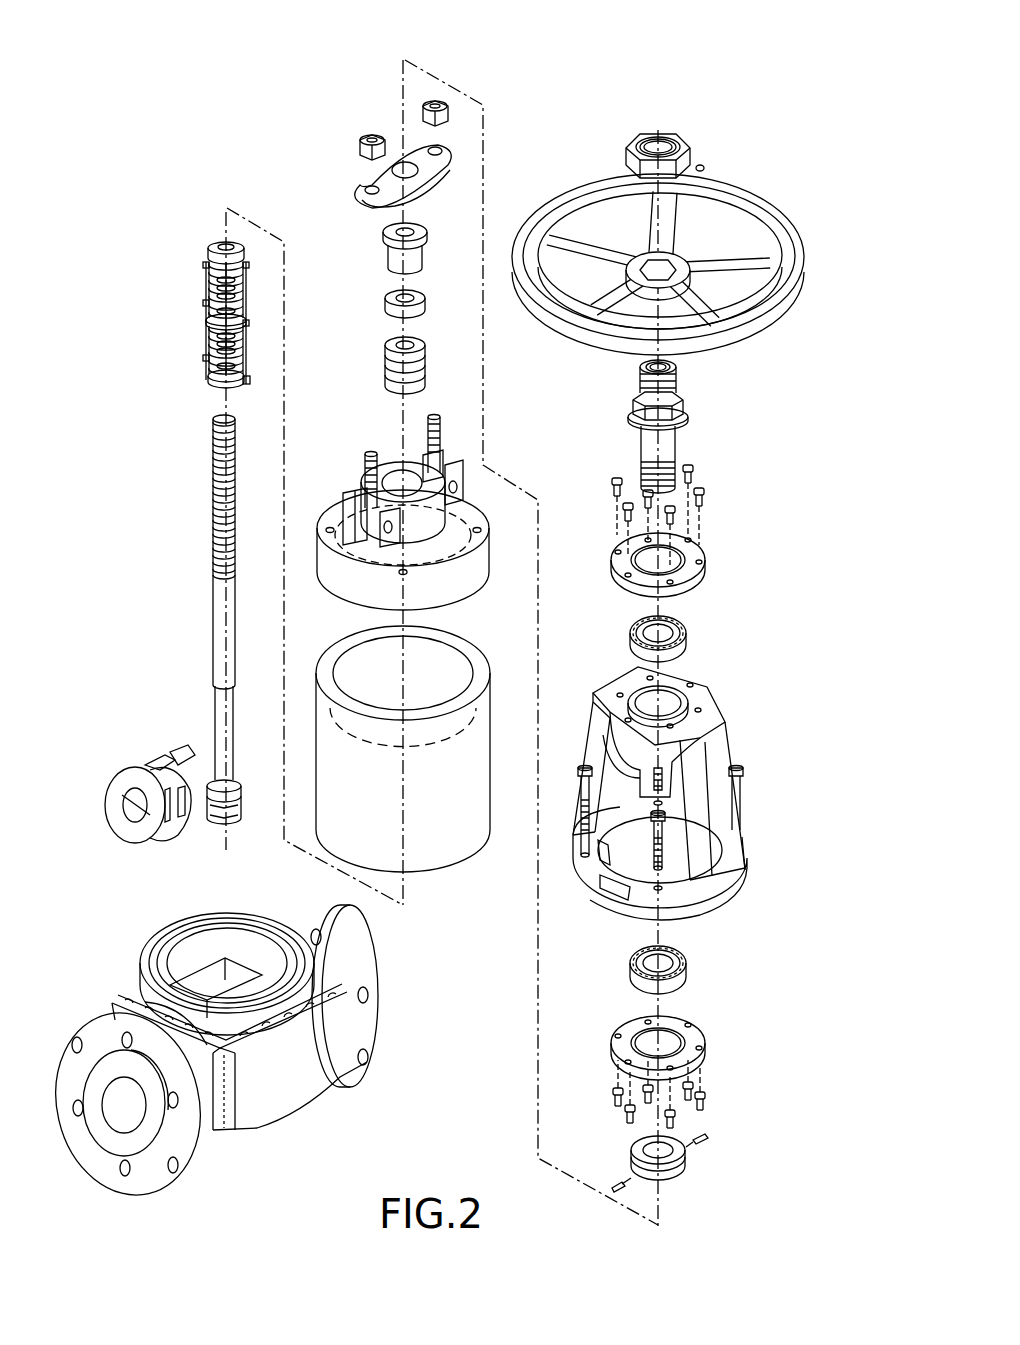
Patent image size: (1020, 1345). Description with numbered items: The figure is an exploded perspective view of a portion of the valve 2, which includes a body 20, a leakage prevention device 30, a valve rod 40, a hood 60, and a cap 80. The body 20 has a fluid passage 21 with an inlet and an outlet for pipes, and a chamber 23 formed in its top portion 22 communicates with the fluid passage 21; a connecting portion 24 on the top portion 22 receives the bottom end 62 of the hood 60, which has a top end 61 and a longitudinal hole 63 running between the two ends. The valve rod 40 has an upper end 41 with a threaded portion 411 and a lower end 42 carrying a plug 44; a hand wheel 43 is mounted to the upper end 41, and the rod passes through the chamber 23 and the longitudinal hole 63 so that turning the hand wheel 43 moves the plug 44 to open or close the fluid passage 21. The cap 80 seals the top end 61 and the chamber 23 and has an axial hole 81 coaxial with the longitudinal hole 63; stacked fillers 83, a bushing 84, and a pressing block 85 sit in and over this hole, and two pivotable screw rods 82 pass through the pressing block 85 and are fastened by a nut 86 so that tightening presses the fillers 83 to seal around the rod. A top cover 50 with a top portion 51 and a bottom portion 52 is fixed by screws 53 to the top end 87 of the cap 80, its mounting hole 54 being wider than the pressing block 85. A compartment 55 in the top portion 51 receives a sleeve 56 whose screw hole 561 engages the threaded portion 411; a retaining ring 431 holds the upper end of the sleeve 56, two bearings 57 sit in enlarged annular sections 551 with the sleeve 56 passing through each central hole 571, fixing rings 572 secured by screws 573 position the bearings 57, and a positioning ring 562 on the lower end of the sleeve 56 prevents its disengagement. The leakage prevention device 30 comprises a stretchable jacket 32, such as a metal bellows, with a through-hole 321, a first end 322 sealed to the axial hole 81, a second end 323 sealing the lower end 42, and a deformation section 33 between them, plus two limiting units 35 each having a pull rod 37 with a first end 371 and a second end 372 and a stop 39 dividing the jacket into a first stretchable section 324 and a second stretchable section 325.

The valve 2 is at (512, 110).
The body 20 is at (293, 1097).
The fluid passage 21 is at (125, 1108).
The top portion 22 is at (145, 990).
The chamber 23 is at (255, 975).
The connecting portion 24 is at (180, 928).
The leakage prevention device 30 is at (212, 220).
The stretchable jacket 32 is at (243, 280).
The deformation section 33 is at (207, 318).
The limiting unit 35 is at (252, 360).
The pull rod 37 is at (244, 346).
The stop 39 is at (240, 322).
The valve rod 40 is at (222, 660).
The upper end 41 is at (215, 433).
The lower end 42 is at (228, 790).
The hand wheel 43 is at (577, 185).
The plug 44 is at (130, 762).
The top cover 50 is at (718, 800).
The top portion 51 is at (693, 720).
The bottom portion 52 is at (678, 908).
The screws 53 is at (663, 840).
The mounting hole 54 is at (612, 862).
The compartment 55 is at (672, 703).
The sleeve 56 is at (665, 450).
The bearing 57 is at (680, 648).
The hood 60 is at (490, 748).
The top end 61 is at (477, 706).
The bottom end 62 is at (465, 840).
The longitudinal hole 63 is at (448, 663).
The cap 80 is at (477, 578).
The axial hole 81 is at (413, 482).
The screw rods 82 is at (436, 420).
The fillers 83 is at (368, 385).
The bushing 84 is at (388, 258).
The pressing block 85 is at (358, 197).
The nut 86 is at (362, 143).
The top end 87 is at (333, 515).
The through-hole 321 is at (222, 247).
The first end 322 is at (213, 264).
The second end 323 is at (212, 377).
The first stretchable section 324 is at (209, 350).
The second stretchable section 325 is at (210, 295).
The first end 371 is at (248, 300).
The second end 372 is at (248, 384).
The threaded portion 411 is at (213, 523).
The retaining ring 431 is at (683, 150).
The enlarged annular sections 551 is at (640, 692).
The screw hole 561 is at (672, 373).
The positioning ring 562 is at (680, 1172).
The central hole 571 is at (672, 630).
The fixing ring 572 is at (705, 556).
The screws 573 is at (700, 495).